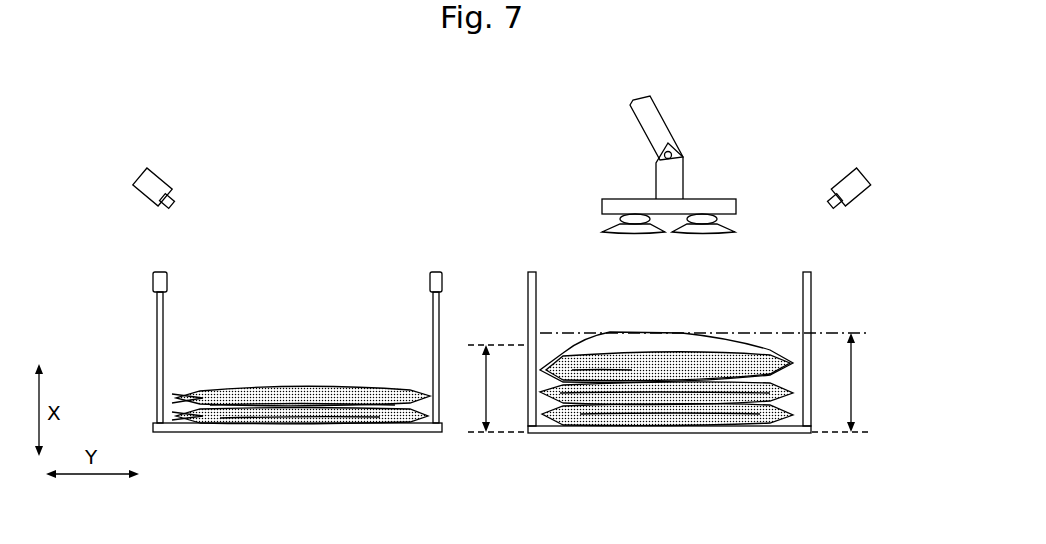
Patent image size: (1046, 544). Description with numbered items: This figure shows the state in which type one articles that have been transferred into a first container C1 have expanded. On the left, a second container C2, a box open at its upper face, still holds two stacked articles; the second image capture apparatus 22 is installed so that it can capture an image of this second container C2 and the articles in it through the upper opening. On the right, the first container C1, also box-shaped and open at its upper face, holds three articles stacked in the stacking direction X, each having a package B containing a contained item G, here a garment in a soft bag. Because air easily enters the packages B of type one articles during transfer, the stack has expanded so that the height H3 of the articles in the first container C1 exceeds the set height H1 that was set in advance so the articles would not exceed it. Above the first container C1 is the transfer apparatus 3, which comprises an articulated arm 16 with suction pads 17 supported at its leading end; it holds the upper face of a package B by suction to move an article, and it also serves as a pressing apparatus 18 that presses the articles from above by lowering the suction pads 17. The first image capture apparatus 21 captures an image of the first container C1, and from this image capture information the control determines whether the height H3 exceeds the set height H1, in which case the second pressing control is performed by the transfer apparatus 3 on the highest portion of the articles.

The transfer apparatus 3 is at (684, 197).
The pressing apparatus 18 is at (684, 197).
The articulated arm 16 is at (652, 127).
The suction pad 17 is at (703, 233).
The first image capture apparatus 21 is at (839, 175).
The second image capture apparatus 22 is at (161, 176).
The first container C1 is at (667, 364).
The second container C2 is at (257, 336).
The package B is at (682, 333).
The contained item G is at (637, 357).
The set height H1 is at (497, 388).
The height of the articles H3 is at (711, 382).